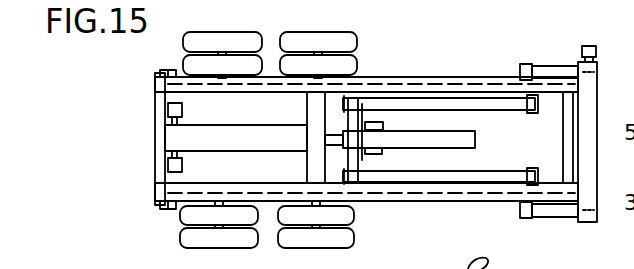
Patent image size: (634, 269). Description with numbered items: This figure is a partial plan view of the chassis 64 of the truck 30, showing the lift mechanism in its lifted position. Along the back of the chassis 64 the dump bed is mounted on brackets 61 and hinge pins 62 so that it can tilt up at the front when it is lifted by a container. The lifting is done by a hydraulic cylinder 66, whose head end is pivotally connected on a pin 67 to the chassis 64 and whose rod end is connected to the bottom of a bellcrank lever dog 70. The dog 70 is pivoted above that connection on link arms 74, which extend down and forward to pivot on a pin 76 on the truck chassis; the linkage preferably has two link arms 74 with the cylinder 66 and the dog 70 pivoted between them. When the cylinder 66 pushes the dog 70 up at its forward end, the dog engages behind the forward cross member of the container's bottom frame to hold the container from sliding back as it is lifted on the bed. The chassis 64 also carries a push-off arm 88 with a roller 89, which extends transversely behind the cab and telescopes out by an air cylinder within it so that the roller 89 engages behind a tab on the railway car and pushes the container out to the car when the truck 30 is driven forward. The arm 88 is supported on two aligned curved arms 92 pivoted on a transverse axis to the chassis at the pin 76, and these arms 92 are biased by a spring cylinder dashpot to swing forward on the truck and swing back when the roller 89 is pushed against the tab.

The truck 30 is at (372, 201).
The brackets 61 is at (157, 77).
The hinge pins 62 is at (162, 72).
The chassis 64 is at (158, 103).
The hydraulic cylinder 66 is at (165, 139).
The pin 67 is at (165, 162).
The bellcrank lever dog 70 is at (476, 138).
The link arms 74 is at (462, 100).
The pin 76 is at (527, 66).
The push-off arm 88 is at (598, 94).
The roller 89 is at (602, 40).
The curved arms 92 is at (563, 72).